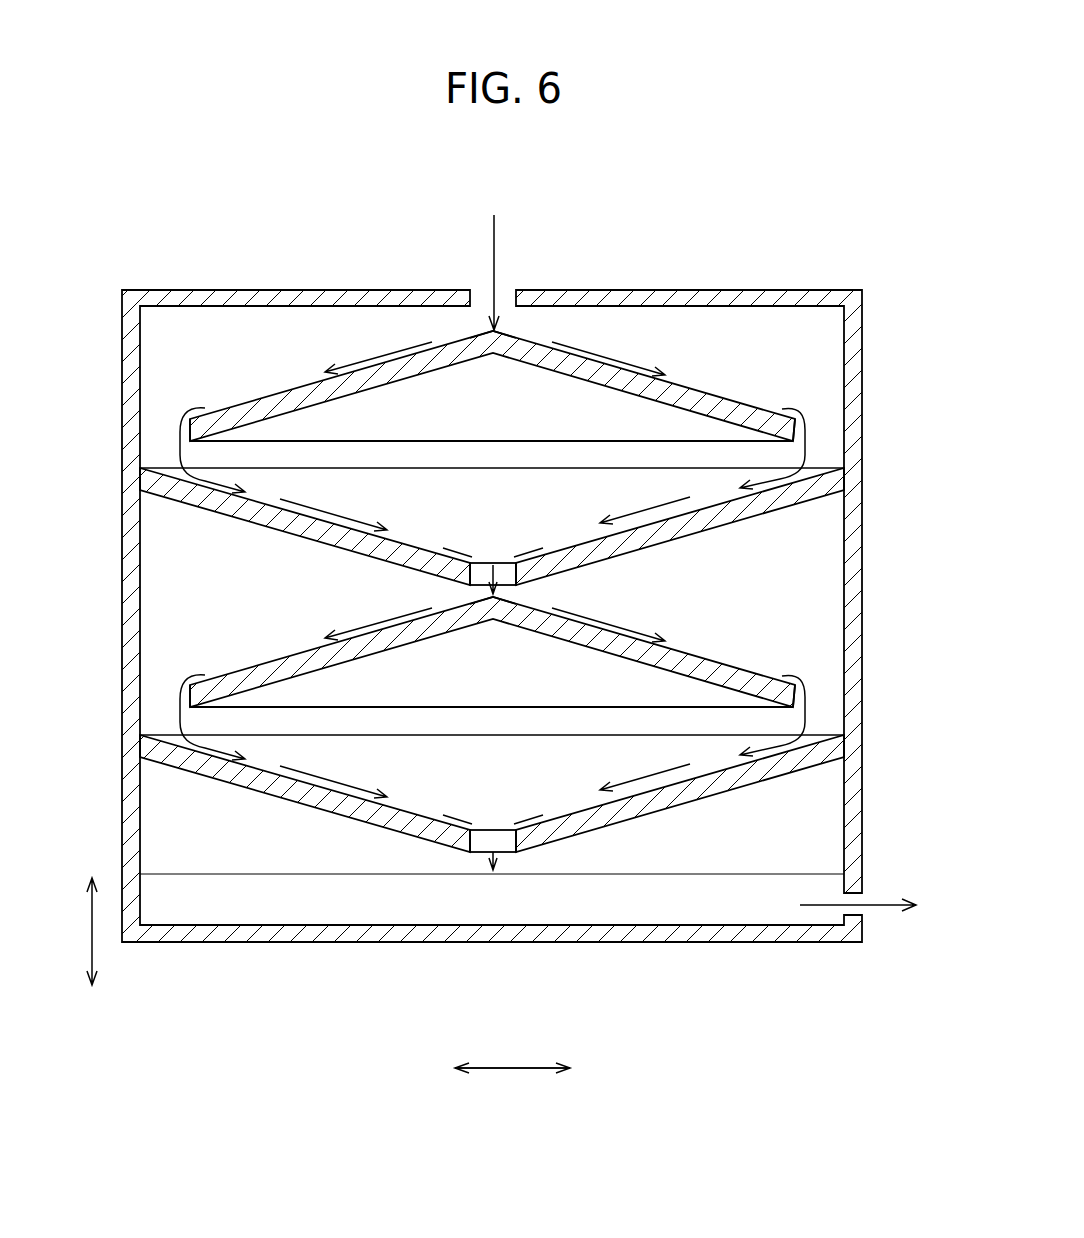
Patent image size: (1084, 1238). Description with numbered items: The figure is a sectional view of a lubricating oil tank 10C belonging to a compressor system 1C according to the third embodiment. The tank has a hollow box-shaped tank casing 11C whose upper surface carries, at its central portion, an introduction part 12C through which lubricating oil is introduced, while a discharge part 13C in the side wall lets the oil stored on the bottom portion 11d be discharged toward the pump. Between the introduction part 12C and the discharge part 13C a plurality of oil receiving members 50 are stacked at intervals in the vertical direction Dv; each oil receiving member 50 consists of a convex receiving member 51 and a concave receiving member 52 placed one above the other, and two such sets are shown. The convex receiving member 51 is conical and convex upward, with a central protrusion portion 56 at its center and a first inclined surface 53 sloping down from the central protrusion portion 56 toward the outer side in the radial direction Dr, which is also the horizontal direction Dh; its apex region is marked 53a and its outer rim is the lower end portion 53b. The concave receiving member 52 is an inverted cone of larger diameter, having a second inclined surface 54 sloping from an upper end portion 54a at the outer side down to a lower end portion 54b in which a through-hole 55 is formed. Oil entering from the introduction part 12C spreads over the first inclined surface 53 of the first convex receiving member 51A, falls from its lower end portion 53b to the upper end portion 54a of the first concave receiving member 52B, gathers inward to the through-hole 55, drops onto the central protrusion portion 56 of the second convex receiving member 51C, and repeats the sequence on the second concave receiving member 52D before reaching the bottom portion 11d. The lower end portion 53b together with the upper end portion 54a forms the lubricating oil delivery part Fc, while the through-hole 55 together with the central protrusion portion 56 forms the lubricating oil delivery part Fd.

The lubricating oil tank 10C is at (494, 575).
The compressor system 1C is at (494, 575).
The tank casing 11C is at (799, 276).
The bottom portion 11d is at (578, 918).
The introduction part 12C is at (504, 305).
The discharge part 13C is at (858, 916).
The oil receiving member 50 is at (160, 458).
The convex receiving member 51 is at (574, 453).
The first convex receiving member 51A is at (769, 394).
The second convex receiving member 51C is at (769, 660).
The concave receiving member 52 is at (496, 627).
The first concave receiving member 52B is at (168, 488).
The second concave receiving member 52D is at (168, 765).
The first inclined surface 53 is at (606, 372).
The apex portion of first plate 53a is at (496, 332).
The lower end portion 53b is at (800, 428).
The second inclined surface 54 is at (622, 470).
The upper end portion 54a is at (846, 468).
The lower end portion 54b is at (517, 562).
The through-hole 55 is at (498, 562).
The central protrusion portion 56 is at (490, 330).
The lubricating oil delivery part Fd is at (164, 432).
The lubricating oil delivery part Fc is at (822, 440).
The vertical direction Dv is at (73, 931).
The radial direction Dr is at (512, 1053).
The horizontal direction Dh is at (512, 1087).